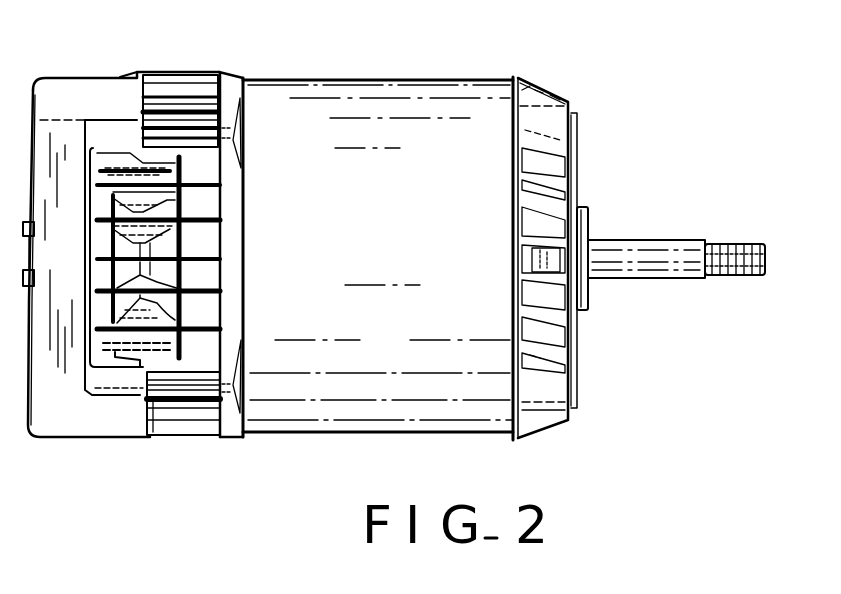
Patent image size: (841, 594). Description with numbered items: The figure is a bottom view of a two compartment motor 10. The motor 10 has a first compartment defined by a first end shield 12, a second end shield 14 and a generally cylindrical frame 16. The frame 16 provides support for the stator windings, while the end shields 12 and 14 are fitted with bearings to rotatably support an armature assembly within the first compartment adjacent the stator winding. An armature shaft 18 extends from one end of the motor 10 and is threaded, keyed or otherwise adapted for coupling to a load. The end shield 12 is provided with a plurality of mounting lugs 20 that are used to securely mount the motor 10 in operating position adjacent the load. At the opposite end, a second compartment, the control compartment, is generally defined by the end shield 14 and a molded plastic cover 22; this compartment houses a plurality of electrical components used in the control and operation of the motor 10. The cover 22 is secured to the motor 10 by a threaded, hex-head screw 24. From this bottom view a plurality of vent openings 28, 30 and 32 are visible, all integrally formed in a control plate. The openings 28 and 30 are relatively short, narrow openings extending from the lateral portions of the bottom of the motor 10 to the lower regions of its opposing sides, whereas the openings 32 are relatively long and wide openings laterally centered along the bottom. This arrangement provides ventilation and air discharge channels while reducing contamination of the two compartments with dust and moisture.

The two compartment motor 10 is at (670, 104).
The first end shield 12 is at (532, 88).
The second end shield 14 is at (233, 88).
The generally cylindrical frame 16 is at (378, 92).
The armature shaft 18 is at (678, 246).
The mounting lugs 20 is at (562, 115).
The molded plastic cover 22 is at (77, 90).
The threaded hex-head screw 24 is at (37, 256).
The vent openings 28 is at (179, 92).
The vent openings 30 is at (183, 427).
The vent openings 32 is at (203, 174).